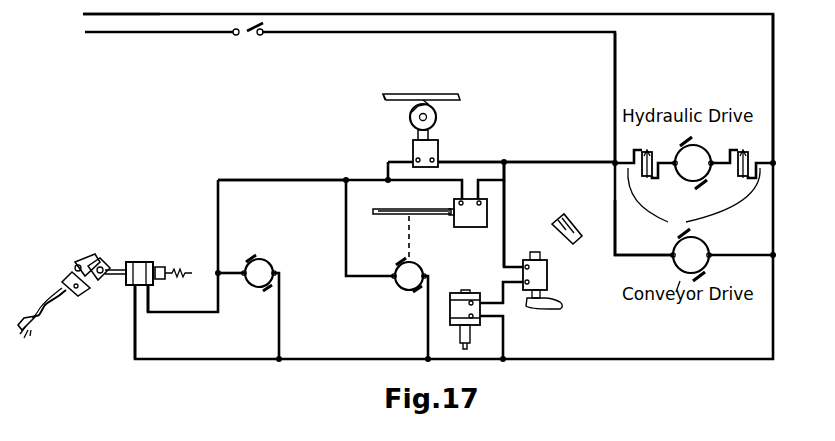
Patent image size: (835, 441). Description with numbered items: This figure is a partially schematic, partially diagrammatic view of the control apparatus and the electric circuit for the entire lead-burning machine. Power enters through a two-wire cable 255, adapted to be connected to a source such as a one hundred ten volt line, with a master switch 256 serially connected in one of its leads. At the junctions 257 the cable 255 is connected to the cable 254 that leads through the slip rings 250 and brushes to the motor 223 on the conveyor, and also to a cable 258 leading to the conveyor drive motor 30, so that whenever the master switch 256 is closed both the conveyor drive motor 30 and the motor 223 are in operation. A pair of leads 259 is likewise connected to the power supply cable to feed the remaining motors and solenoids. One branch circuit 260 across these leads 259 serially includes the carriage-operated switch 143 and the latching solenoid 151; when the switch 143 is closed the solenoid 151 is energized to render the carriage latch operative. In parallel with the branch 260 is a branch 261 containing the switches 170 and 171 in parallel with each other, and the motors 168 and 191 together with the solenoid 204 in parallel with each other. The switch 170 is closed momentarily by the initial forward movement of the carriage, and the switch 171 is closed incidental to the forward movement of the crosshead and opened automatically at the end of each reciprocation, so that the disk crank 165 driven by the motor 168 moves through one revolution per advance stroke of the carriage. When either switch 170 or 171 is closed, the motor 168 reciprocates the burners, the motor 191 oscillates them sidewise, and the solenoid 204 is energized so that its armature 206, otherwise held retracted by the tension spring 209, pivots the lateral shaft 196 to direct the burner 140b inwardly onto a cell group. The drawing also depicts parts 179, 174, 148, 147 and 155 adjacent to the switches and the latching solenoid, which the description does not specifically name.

The two-wire cable 255 is at (163, 14).
The master switch 256 is at (248, 34).
The trip bar 179 is at (395, 92).
The cam 174 is at (410, 117).
The switch 170 is at (438, 145).
The branch circuit 261 is at (312, 180).
The branch circuit 260 is at (526, 192).
The pair of leads 259 is at (570, 172).
The switch 171 is at (469, 213).
The disk crank 165 is at (395, 214).
The motor 168 is at (402, 290).
The motor 191 is at (252, 258).
The solenoid 204 is at (143, 262).
The armature 206 is at (162, 288).
The tension spring 209 is at (180, 265).
The burner 140b is at (47, 292).
The lateral shaft 196 is at (88, 290).
The cam 148 is at (578, 214).
The carriage-operated switch 143 is at (547, 274).
The roller arm 147 is at (548, 310).
The latching solenoid 151 is at (466, 289).
The plunger 155 is at (470, 334).
The junctions 257 is at (614, 162).
The slip rings 250 is at (640, 140).
The motor 223 is at (710, 130).
The cable 254 is at (694, 199).
The cable 258 is at (616, 246).
The conveyor drive motor 30 is at (700, 243).